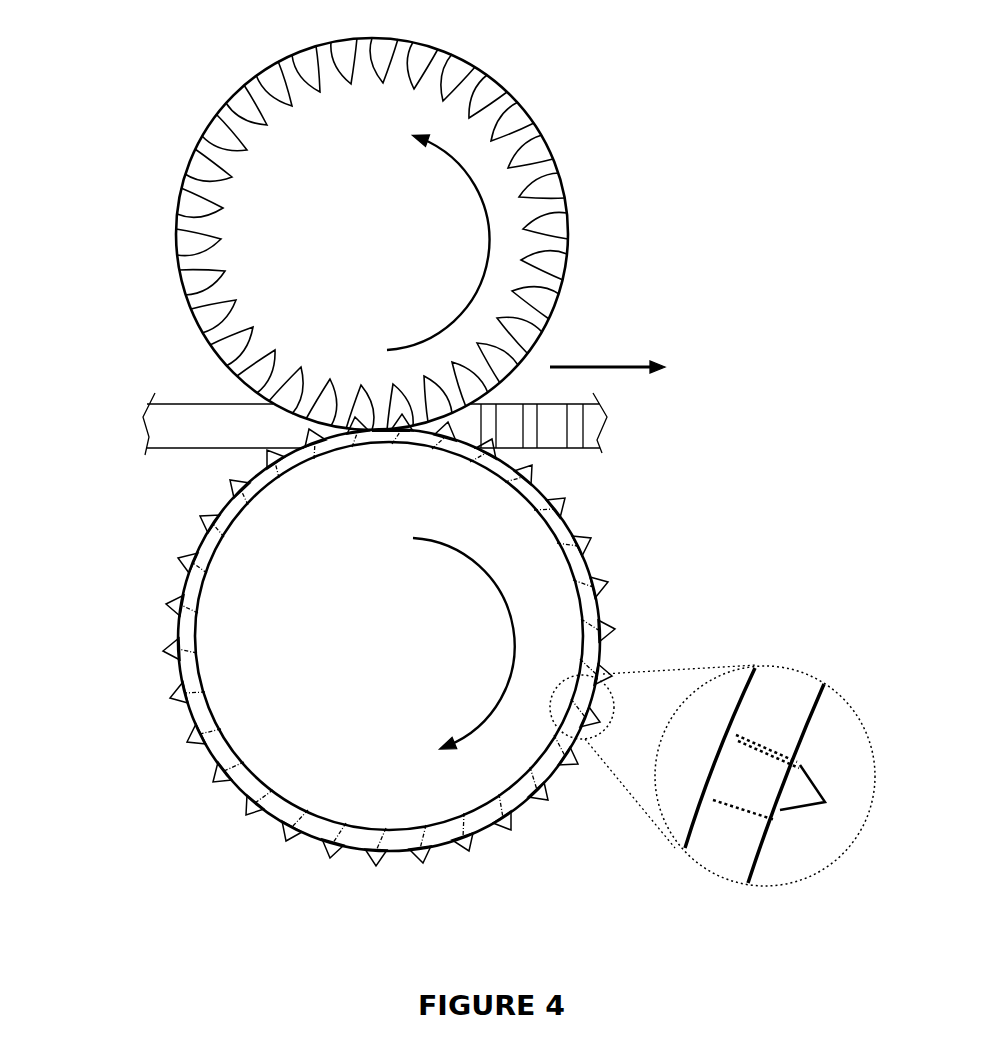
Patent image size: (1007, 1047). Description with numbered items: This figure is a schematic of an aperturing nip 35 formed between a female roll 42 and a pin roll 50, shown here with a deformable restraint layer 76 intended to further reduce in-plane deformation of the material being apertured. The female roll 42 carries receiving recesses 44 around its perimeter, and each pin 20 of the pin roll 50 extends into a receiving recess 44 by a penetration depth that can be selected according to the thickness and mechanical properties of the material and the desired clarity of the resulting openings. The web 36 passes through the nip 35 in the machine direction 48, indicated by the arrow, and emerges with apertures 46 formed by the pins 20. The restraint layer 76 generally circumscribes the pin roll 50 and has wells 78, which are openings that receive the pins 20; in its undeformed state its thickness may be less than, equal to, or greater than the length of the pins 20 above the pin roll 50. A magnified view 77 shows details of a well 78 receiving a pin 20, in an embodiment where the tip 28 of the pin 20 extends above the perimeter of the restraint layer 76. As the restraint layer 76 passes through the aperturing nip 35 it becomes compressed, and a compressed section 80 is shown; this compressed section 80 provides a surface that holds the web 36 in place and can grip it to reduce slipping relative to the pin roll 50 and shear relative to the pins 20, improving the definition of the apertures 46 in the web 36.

The pin 20 is at (453, 674).
The tip 28 is at (825, 802).
The aperturing nip 35 is at (453, 674).
The web 36 is at (357, 398).
The female roll 42 is at (336, 234).
The receiving recess 44 is at (175, 248).
The apertures 46 is at (580, 440).
The machine direction 48 is at (597, 372).
The pin roll 50 is at (727, 692).
The deformable restraint layer 76 is at (717, 845).
The magnified view 77 is at (838, 691).
The wells 78 is at (770, 740).
The compressed section 80 is at (420, 447).